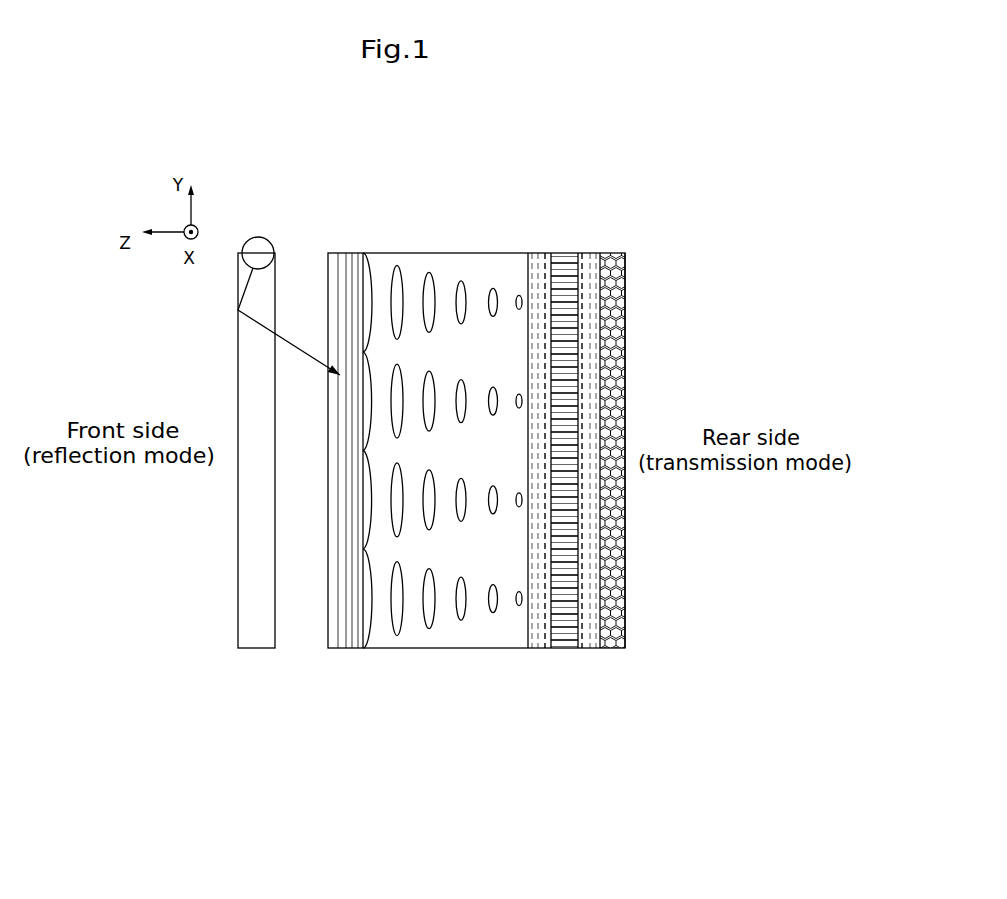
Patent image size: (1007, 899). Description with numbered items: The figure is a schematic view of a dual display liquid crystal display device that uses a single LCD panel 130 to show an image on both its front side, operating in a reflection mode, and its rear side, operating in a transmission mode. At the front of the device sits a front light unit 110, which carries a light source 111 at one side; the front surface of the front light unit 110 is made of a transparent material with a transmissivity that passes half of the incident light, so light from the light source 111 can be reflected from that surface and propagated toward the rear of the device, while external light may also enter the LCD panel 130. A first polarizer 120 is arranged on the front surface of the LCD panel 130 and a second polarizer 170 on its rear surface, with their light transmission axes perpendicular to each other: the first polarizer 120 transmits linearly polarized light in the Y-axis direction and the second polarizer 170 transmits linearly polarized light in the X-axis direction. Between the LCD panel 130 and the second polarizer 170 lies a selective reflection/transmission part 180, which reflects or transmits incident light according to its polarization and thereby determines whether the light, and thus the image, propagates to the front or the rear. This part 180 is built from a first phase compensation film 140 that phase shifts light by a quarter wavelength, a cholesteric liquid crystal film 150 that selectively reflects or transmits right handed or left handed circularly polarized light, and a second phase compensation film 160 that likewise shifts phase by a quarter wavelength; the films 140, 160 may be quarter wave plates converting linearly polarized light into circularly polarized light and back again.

The front light unit 110 is at (255, 648).
The light source 111 is at (257, 237).
The first polarizer 120 is at (345, 648).
The LCD panel 130 is at (447, 648).
The first phase compensation film 140 is at (540, 648).
The cholesteric liquid crystal (CLC) film 150 is at (562, 648).
The second phase compensation film 160 is at (605, 485).
The second polarizer 170 is at (612, 648).
The selective reflection/transmission part 180 is at (570, 510).